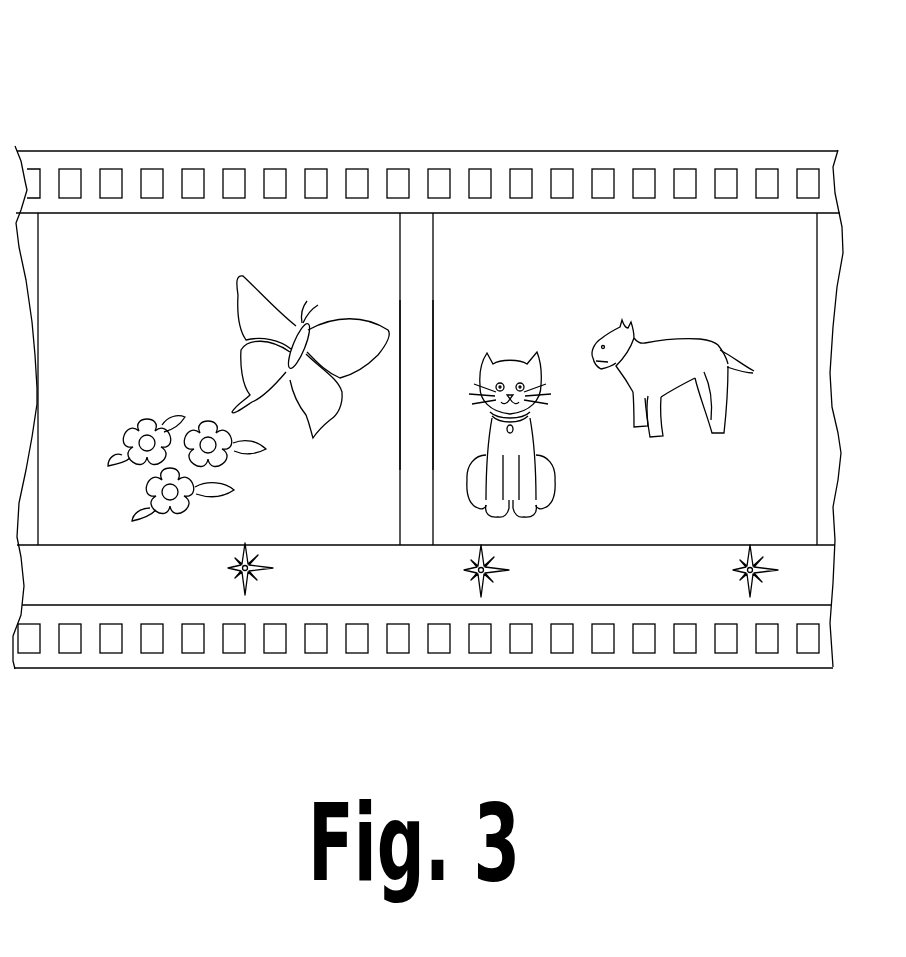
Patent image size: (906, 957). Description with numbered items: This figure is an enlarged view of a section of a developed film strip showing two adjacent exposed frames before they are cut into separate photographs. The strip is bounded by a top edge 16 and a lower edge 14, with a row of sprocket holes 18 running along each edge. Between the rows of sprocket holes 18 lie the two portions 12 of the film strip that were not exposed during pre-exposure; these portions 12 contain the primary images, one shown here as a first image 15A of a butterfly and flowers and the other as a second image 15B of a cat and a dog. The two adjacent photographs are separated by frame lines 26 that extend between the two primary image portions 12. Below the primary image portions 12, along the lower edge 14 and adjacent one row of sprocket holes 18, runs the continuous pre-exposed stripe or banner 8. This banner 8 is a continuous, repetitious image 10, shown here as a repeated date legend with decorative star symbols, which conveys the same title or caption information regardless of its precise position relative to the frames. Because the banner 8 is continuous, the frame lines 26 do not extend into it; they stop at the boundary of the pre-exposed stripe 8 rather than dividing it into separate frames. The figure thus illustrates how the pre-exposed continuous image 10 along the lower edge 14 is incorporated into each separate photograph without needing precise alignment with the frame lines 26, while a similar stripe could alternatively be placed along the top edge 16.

The pre-exposed stripe or banner 8 is at (707, 571).
The repetitious image 10 is at (234, 566).
The portions of the film strip containing the primary images 12 is at (323, 263).
The lower edge 14 is at (483, 672).
The first image 15A is at (103, 265).
The second image 15B is at (470, 245).
The top edge 16 is at (300, 150).
The sprocket holes 18 is at (230, 172).
The frame lines 26 is at (413, 247).